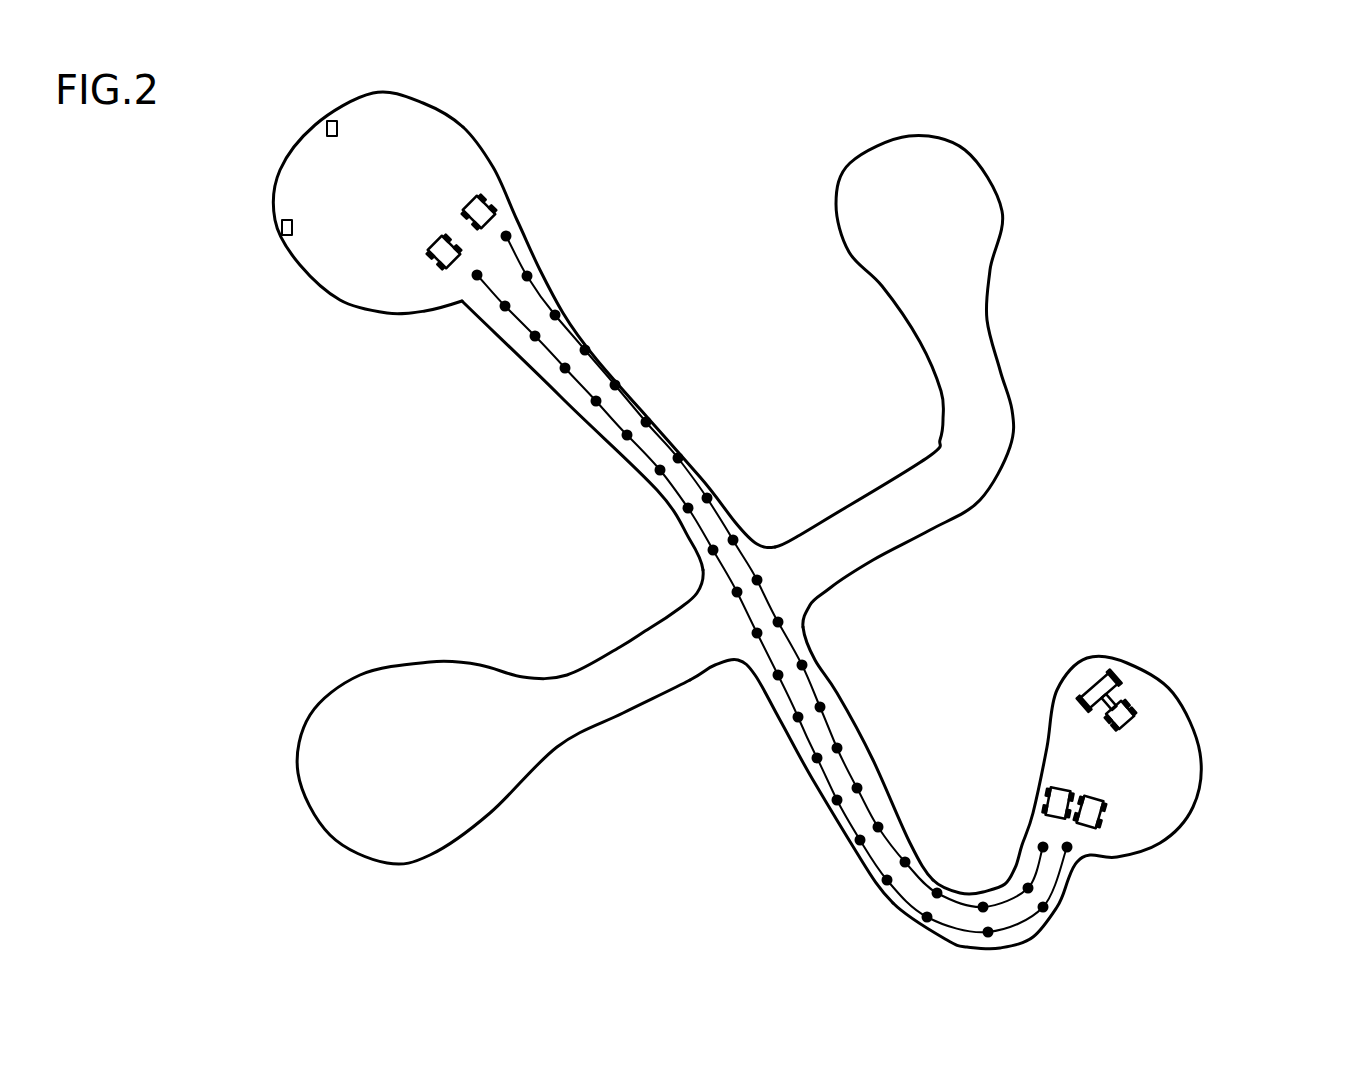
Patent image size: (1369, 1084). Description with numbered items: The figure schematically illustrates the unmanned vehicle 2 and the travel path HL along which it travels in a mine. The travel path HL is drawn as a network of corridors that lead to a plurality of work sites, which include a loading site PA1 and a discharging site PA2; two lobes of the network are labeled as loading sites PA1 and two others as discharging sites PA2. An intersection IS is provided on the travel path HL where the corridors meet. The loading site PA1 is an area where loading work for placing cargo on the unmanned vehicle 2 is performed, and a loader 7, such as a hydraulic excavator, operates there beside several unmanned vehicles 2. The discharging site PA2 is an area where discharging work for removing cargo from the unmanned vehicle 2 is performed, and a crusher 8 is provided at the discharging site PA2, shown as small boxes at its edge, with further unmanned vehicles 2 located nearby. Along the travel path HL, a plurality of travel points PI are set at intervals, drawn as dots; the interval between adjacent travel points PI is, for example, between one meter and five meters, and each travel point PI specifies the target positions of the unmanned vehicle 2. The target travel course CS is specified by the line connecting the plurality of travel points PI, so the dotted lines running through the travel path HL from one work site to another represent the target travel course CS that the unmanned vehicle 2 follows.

The unmanned vehicle 2 is at (476, 195).
The loader 7 is at (1093, 663).
The crusher 8 is at (332, 121).
The loading site PA1 is at (357, 835).
The discharging site PA2 is at (430, 170).
The travel point PI is at (650, 418).
The target travel course CS is at (853, 777).
The travel path HL is at (872, 896).
The intersection IS is at (735, 670).